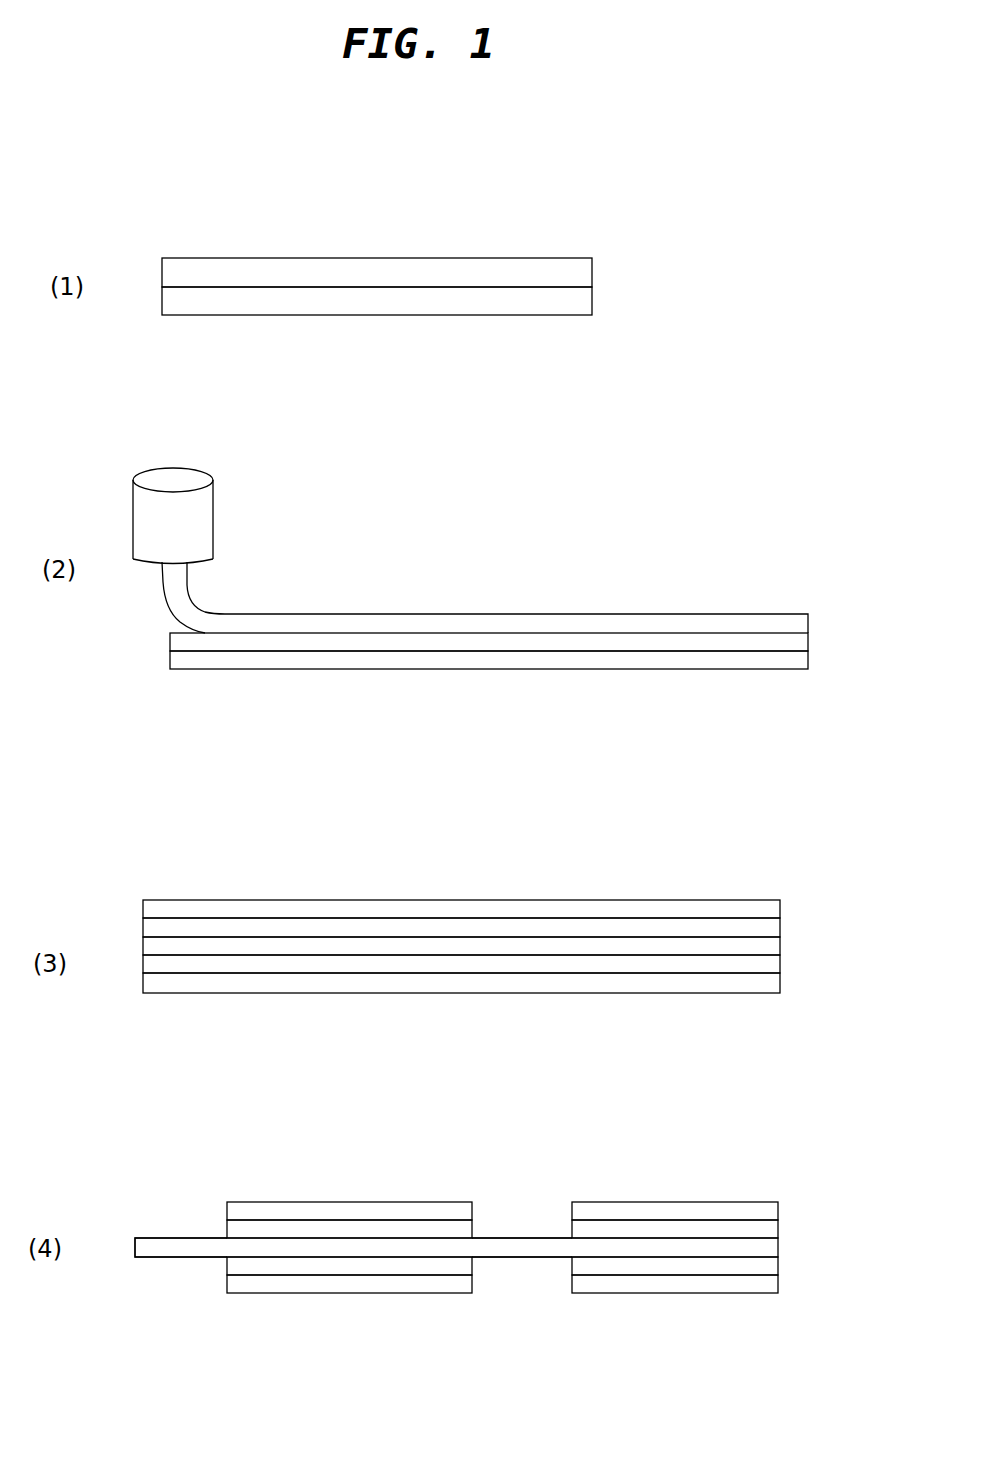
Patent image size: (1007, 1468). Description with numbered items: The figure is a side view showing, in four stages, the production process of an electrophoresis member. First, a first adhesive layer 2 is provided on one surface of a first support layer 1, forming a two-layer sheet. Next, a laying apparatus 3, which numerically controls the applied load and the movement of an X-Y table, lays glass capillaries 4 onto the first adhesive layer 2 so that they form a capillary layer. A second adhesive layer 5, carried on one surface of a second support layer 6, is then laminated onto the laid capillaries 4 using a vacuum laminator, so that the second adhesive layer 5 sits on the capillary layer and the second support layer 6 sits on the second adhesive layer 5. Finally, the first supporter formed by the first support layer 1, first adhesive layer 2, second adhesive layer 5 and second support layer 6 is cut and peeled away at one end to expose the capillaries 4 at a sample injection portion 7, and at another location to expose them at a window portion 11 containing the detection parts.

The first support layer 1 is at (337, 305).
The first adhesive layer 2 is at (350, 270).
The laying apparatus 3 is at (203, 527).
The capillaries 4 is at (428, 623).
The second adhesive layer 5 is at (498, 928).
The second support layer 6 is at (658, 912).
The sample injection portion 7 is at (182, 1268).
The window portion 11 is at (530, 1275).